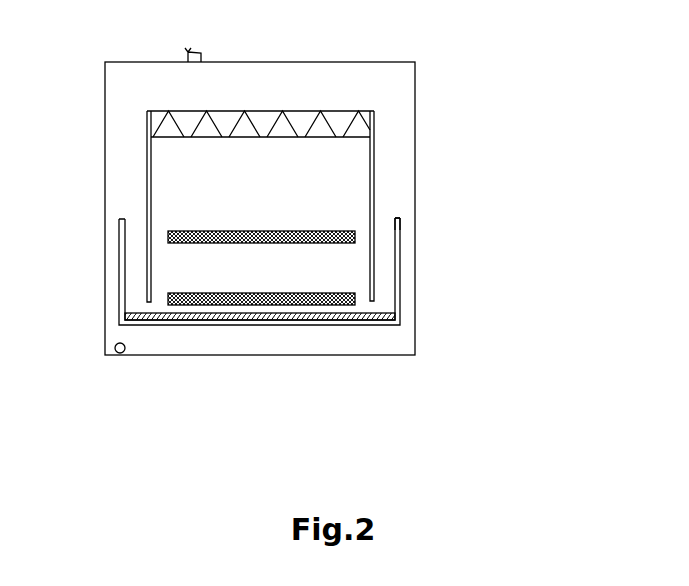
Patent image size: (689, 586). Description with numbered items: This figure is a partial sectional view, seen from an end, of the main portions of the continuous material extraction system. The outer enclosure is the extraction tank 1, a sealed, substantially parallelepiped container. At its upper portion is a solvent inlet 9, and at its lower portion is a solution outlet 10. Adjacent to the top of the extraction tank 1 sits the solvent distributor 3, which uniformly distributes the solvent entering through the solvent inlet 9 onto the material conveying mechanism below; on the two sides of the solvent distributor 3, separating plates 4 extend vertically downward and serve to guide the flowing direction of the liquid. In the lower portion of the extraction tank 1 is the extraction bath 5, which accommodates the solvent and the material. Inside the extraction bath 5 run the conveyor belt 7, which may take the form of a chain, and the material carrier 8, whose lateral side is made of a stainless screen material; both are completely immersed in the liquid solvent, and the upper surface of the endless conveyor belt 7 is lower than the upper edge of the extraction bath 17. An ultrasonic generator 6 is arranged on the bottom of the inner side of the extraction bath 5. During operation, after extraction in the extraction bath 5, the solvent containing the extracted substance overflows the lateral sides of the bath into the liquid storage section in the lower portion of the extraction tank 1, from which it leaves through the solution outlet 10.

The extraction tank 1 is at (120, 132).
The solvent distributor 3 is at (355, 134).
The separating plates 4 is at (371, 203).
The extraction bath 5 is at (398, 258).
The ultrasonic generator 6 is at (387, 317).
The conveyor belt 7 is at (168, 240).
The material carrier 8 is at (185, 232).
The solvent inlet 9 is at (197, 53).
The solution outlet 10 is at (116, 344).
The upper edge of the extraction bath 17 is at (398, 219).